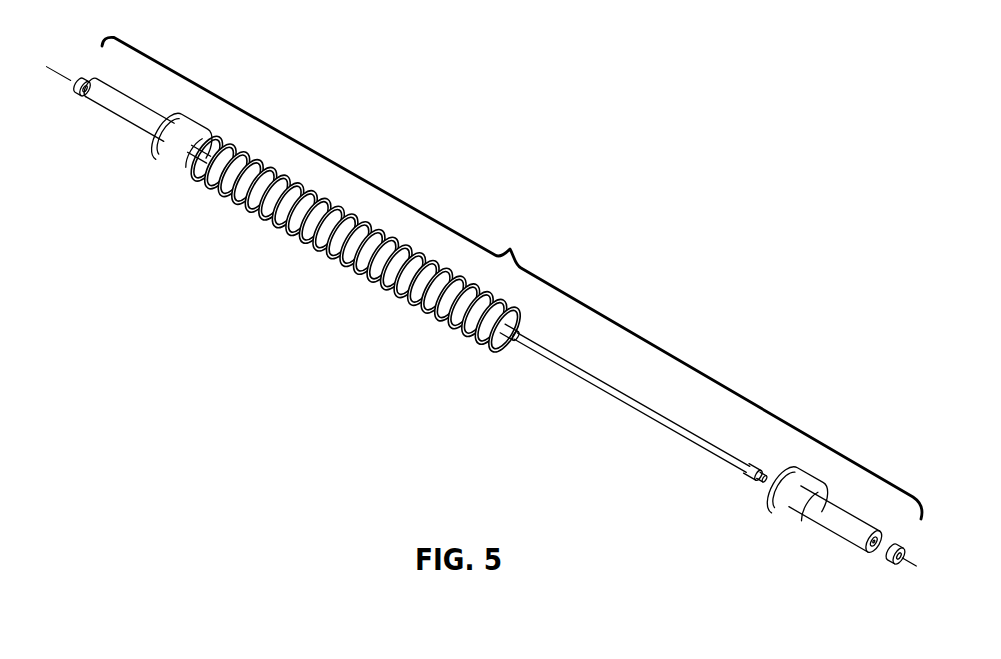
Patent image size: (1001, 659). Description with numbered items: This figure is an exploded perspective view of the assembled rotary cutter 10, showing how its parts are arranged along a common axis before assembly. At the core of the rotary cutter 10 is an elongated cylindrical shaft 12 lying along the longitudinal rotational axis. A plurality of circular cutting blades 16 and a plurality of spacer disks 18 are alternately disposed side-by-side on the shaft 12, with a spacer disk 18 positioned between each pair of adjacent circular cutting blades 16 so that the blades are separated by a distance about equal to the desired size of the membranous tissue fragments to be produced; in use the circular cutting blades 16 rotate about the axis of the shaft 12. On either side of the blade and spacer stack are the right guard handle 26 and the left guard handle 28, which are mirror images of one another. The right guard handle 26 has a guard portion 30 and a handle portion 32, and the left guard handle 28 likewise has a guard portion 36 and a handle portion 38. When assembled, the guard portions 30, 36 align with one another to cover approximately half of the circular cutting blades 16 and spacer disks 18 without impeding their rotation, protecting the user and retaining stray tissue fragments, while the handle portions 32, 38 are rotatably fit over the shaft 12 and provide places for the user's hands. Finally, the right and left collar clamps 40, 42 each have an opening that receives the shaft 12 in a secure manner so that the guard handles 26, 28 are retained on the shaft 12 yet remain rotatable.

The rotary cutter 10 is at (512, 278).
The cylindrical shaft 12 is at (603, 394).
The circular cutting blades 16 is at (501, 347).
The spacer disks 18 is at (329, 261).
The right guard handle 26 is at (824, 528).
The left guard handle 28 is at (141, 135).
The guard portion 30 is at (773, 497).
The handle portion 32 is at (855, 531).
The guard portion 36 is at (165, 142).
The handle portion 38 is at (111, 105).
The right collar clamp 40 is at (886, 551).
The left collar clamp 42 is at (76, 90).